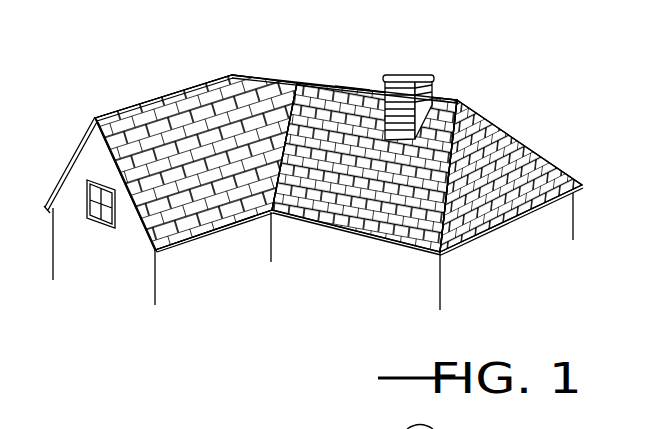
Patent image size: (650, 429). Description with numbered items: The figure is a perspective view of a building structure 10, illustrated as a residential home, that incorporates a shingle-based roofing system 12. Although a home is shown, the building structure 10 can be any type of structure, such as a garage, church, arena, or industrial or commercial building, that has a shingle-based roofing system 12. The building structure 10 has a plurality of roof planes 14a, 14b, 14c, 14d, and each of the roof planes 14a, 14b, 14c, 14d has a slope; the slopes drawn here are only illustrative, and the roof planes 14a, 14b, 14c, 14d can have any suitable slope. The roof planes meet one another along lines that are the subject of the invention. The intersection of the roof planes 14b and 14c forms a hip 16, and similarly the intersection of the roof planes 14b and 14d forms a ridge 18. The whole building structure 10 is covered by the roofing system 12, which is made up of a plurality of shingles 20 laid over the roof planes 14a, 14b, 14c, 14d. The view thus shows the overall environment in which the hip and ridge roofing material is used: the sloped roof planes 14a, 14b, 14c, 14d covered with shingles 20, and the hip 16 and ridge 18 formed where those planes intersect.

The building structure 10 is at (65, 147).
The shingle-based roofing system 12 is at (143, 106).
The roof plane 14a is at (148, 228).
The roof plane 14b is at (392, 202).
The roof plane 14c is at (510, 200).
The roof plane 14d is at (352, 84).
The hip 16 is at (452, 212).
The ridge 18 is at (317, 82).
The shingles 20 is at (225, 203).